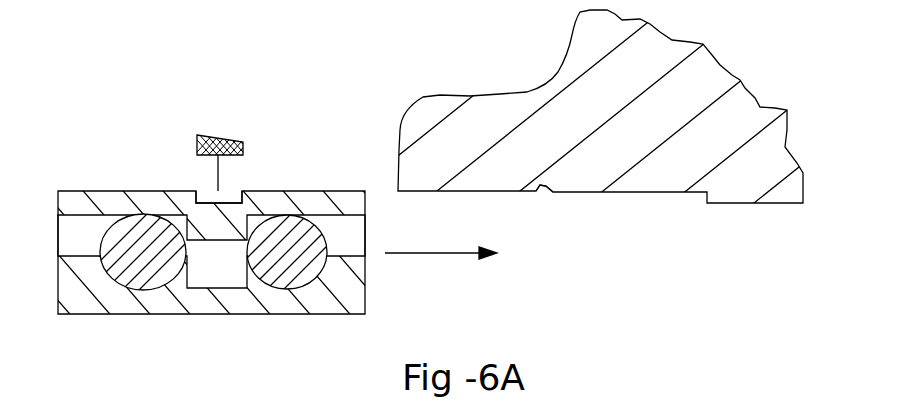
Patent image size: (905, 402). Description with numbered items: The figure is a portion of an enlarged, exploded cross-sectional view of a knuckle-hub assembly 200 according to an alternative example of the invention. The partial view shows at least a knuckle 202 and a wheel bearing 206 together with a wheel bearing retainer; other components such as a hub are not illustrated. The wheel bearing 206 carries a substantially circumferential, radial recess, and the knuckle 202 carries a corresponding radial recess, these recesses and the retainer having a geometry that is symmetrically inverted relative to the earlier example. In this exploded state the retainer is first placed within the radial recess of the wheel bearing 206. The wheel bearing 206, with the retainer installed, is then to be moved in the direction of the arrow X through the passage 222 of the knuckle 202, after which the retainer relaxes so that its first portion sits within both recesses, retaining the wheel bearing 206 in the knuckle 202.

The knuckle-hub assembly 200 is at (223, 52).
The wheel bearing 206 is at (80, 175).
The passage 222 is at (428, 322).
The knuckle 202 is at (763, 43).